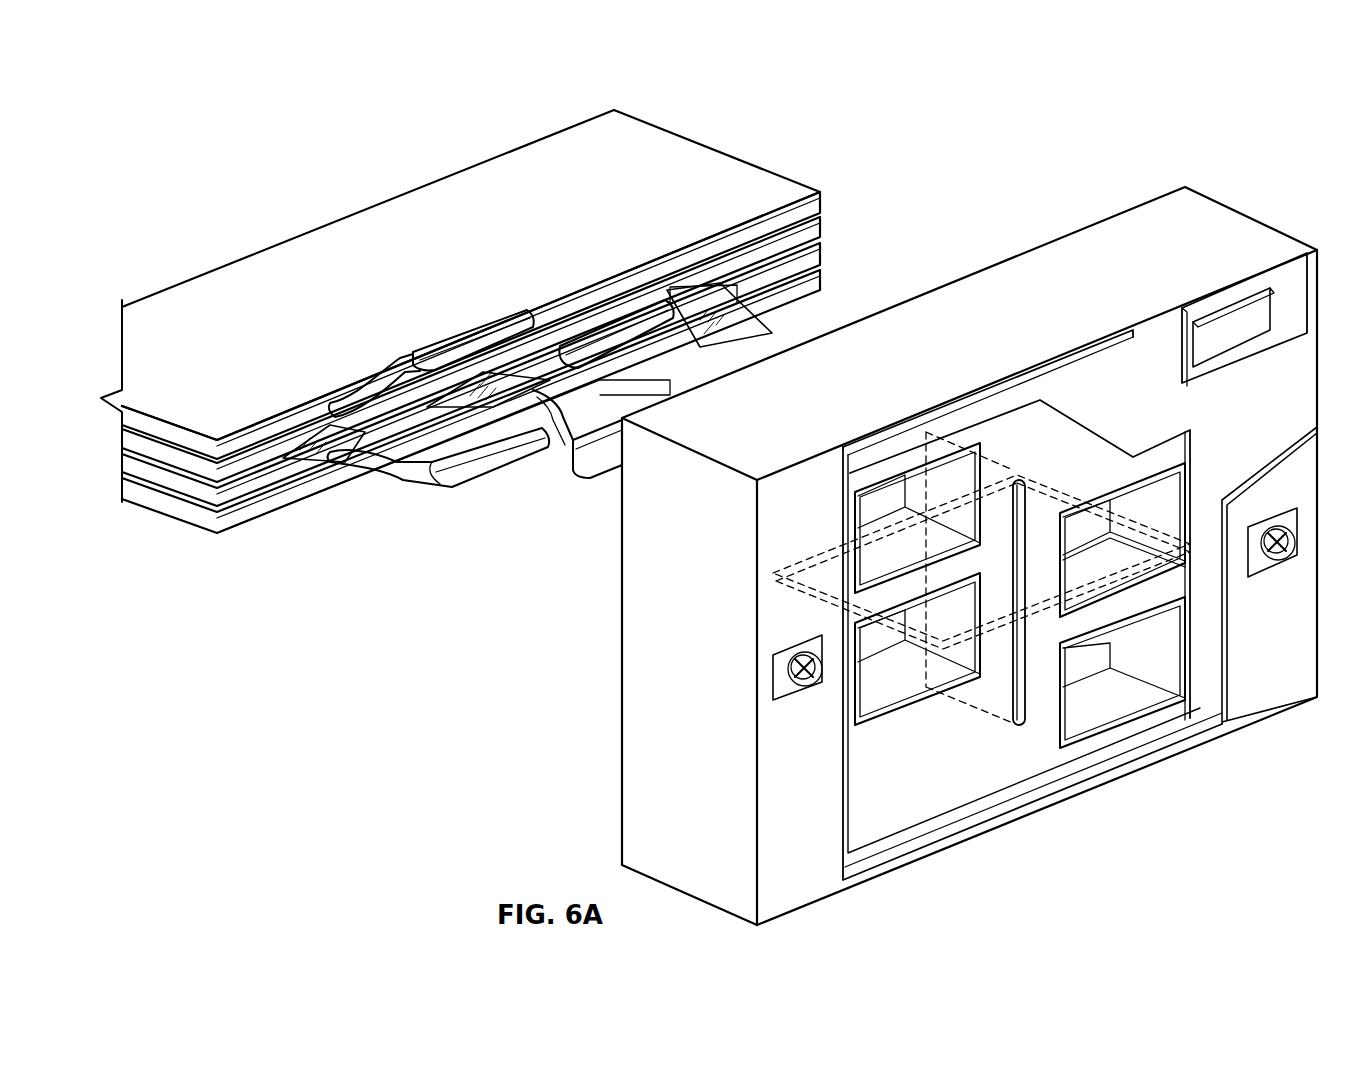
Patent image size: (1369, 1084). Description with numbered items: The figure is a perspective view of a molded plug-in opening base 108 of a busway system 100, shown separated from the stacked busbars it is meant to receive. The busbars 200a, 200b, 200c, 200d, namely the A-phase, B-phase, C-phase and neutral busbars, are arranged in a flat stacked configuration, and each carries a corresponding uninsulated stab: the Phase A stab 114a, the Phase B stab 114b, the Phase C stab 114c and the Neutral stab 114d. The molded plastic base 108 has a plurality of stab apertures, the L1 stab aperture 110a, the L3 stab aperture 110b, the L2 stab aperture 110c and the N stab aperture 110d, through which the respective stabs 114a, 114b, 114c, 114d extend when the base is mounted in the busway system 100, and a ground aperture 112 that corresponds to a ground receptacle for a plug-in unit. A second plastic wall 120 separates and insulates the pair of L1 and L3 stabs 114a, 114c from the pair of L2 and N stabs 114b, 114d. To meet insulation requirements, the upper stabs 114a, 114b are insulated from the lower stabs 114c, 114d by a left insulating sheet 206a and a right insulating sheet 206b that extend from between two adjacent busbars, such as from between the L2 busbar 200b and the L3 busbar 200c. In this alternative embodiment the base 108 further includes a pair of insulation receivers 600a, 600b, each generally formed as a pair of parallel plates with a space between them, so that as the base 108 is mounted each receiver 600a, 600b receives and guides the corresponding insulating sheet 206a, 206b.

The busway system 100 is at (176, 164).
The molded plastic base 108 is at (1200, 198).
The L1 stab aperture 110a is at (885, 572).
The L3 stab aperture 110b is at (1150, 520).
The L2 stab aperture 110c is at (909, 694).
The N stab aperture 110d is at (1162, 658).
The ground aperture 112 is at (1238, 324).
The Phase A (L1) stab 114a is at (477, 330).
The Phase B (L2) stab 114b is at (615, 326).
The Phase C (L3) stab 114c is at (397, 468).
The Neutral (N) stab 114d is at (584, 437).
The second plastic wall 120 is at (1025, 503).
The A-phase (L1) busbar 200a is at (167, 430).
The B-phase (L2) busbar 200b is at (133, 436).
The C-phase (L3) busbar 200c is at (133, 465).
The N busbar 200d is at (172, 502).
The left insulating sheet 206a is at (492, 372).
The right insulating sheet 206b is at (782, 325).
The insulation receiver 600a is at (922, 548).
The insulation receiver 600b is at (1087, 632).